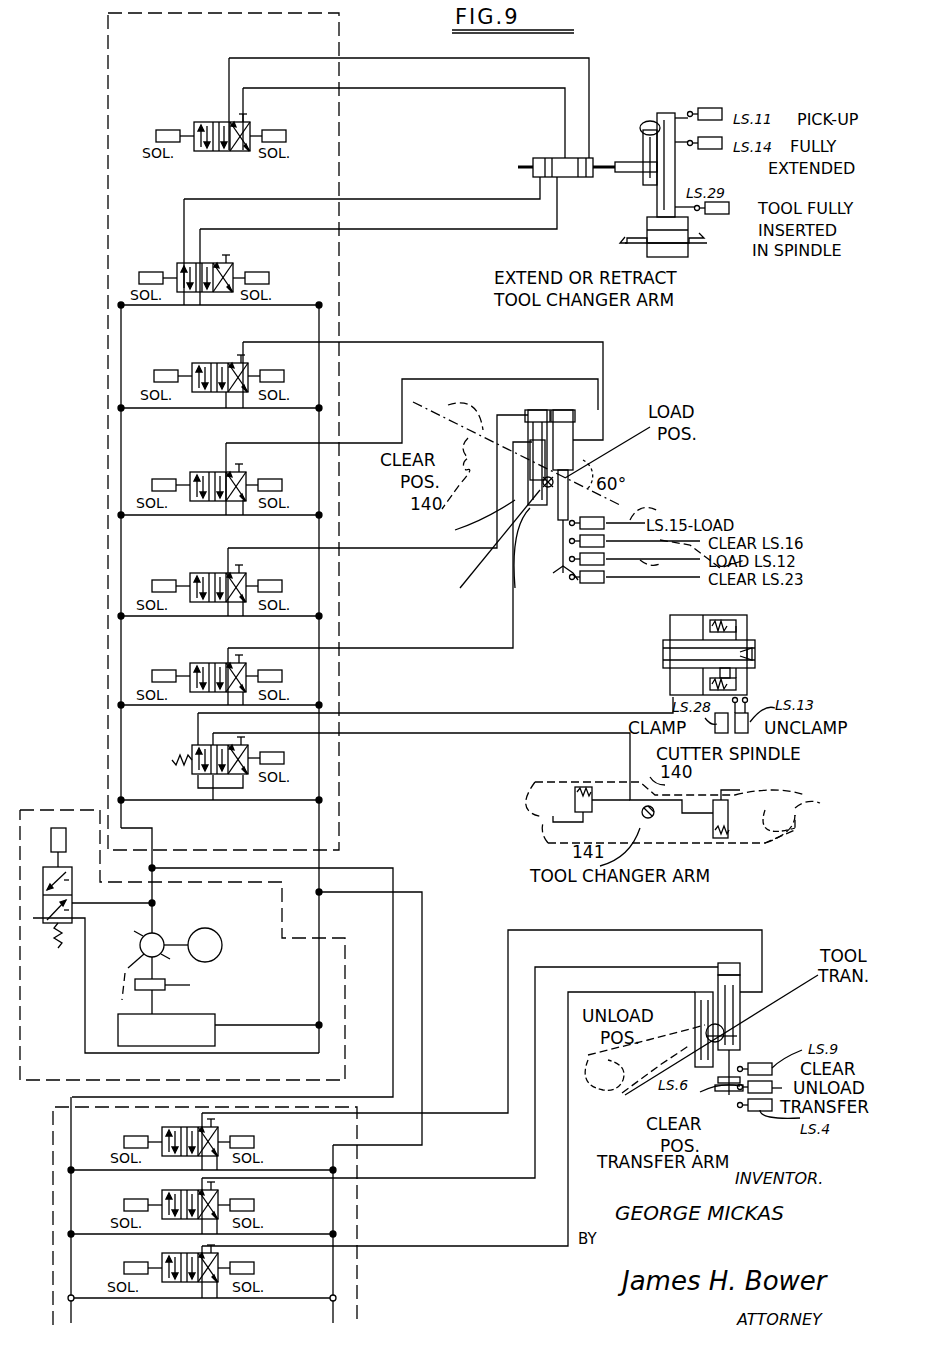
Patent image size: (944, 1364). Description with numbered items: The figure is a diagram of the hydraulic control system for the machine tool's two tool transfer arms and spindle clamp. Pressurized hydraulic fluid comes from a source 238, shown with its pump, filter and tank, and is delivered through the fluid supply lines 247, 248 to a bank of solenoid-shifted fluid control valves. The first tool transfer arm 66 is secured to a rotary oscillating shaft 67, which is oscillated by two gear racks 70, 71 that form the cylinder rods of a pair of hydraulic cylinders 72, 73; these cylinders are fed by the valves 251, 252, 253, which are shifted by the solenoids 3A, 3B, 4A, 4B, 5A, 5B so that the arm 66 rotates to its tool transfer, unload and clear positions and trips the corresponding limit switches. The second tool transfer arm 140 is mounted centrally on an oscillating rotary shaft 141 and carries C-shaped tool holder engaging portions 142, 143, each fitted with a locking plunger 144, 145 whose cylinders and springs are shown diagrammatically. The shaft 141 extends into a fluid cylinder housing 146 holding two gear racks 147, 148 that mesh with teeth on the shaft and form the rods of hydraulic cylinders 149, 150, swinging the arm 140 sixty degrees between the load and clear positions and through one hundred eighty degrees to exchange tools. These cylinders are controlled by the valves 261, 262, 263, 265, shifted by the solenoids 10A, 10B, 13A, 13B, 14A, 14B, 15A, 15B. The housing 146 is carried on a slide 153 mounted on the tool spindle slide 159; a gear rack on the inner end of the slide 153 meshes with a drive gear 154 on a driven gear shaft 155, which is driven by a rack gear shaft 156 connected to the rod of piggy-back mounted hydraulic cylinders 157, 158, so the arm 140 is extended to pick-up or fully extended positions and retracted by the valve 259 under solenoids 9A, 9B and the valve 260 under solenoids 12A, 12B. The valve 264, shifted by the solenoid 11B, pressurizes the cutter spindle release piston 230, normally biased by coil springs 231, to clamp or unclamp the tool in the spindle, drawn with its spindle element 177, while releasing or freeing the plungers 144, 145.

The fluid control valve 260 is at (211, 122).
The solenoid 12A is at (168, 124).
The solenoid 12B is at (272, 124).
The fluid control valve 259 is at (212, 263).
The solenoid 9A is at (158, 265).
The solenoid 9B is at (251, 264).
The fluid control valve 262 is at (209, 363).
The solenoid 13A is at (168, 363).
The solenoid 13B is at (270, 363).
The fluid control valve 265 is at (203, 472).
The solenoid 15A is at (166, 473).
The solenoid 15B is at (269, 473).
The fluid control valve 261 is at (203, 573).
The solenoid 10A is at (166, 573).
The solenoid 10B is at (269, 573).
The fluid control valve 263 is at (206, 663).
The solenoid 14A is at (166, 664).
The solenoid 14B is at (269, 664).
The fluid control valve 264 is at (192, 745).
The solenoid 11B is at (270, 747).
The source of hydraulic fluid 238 is at (62, 803).
The fluid supply line 247 is at (393, 915).
The fluid supply line 248 is at (423, 945).
The fluid control valve 251 is at (180, 1127).
The solenoid 3A is at (140, 1130).
The solenoid 3B is at (238, 1129).
The fluid control valve 252 is at (437, 1100).
The solenoid 5A is at (140, 1194).
The solenoid 5B is at (238, 1193).
The fluid control valve 253 is at (180, 1283).
The solenoid 4A is at (139, 1257).
The solenoid 4B is at (237, 1257).
The hydraulic cylinder 157 is at (542, 158).
The hydraulic cylinder 158 is at (582, 178).
The rack gear shaft 156 is at (630, 172).
The driven gear shaft 155 is at (644, 151).
The drive gear 154 is at (650, 120).
The slide 153 is at (678, 181).
The fluid cylinder housing 146 is at (648, 234).
The tool transfer arm 140 is at (689, 250).
The hydraulic cylinder 150 is at (528, 401).
The hydraulic cylinder 149 is at (560, 410).
The gear rack 147 is at (610, 508).
The gear rack 148 is at (455, 530).
The rotary shaft 141 is at (512, 546).
The tool spindle slide 159 is at (750, 625).
The spindle shaft 177 is at (672, 653).
The cylindrical piston 230 is at (670, 672).
The coil springs 231 is at (732, 684).
The locking plunger 144 is at (555, 823).
The tool holder engaging portion 142 is at (553, 822).
The locking plunger 145 is at (733, 797).
The tool holder engaging portion 143 is at (802, 811).
The hydraulic cylinder 72 is at (696, 992).
The hydraulic cylinder 73 is at (726, 963).
The gear rack 71 is at (735, 1008).
The gear rack 70 is at (706, 1032).
The rotary oscillating shaft 67 is at (740, 1040).
The tool transfer arm 66 is at (642, 1059).